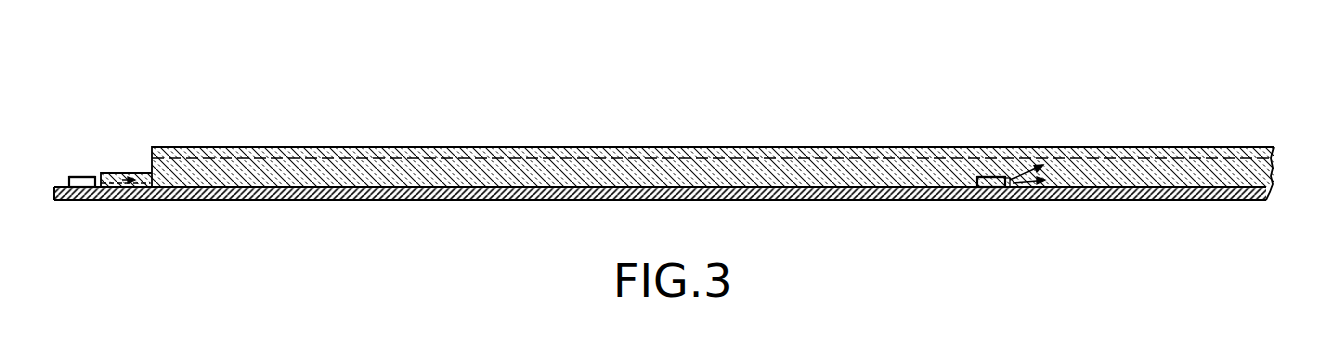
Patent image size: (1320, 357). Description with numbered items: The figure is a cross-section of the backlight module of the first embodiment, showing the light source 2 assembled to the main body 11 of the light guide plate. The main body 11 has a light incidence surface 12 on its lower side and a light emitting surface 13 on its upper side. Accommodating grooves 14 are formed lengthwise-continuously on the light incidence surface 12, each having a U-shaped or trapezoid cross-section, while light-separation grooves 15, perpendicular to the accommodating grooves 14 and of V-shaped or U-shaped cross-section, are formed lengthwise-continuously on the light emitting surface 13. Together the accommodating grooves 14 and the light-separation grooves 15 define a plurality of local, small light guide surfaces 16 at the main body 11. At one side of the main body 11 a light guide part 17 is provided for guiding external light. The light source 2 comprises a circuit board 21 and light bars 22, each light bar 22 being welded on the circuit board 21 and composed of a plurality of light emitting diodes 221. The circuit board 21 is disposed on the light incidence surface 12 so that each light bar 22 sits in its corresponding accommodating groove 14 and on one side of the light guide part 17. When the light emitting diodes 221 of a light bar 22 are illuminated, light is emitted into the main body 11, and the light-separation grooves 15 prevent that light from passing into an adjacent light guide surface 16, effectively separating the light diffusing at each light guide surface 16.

The light source 2 is at (215, 203).
The main body 11 is at (1276, 176).
The light incidence surface 12 is at (1115, 197).
The light emitting surface 13 is at (1084, 145).
The accommodating groove 14 is at (960, 200).
The light-separation groove 15 is at (1203, 147).
The light guide surface 16 is at (562, 146).
The light guide part 17 is at (124, 176).
The circuit board 21 is at (108, 192).
The light bar 22 is at (62, 176).
The light emitting diode 221 is at (83, 176).